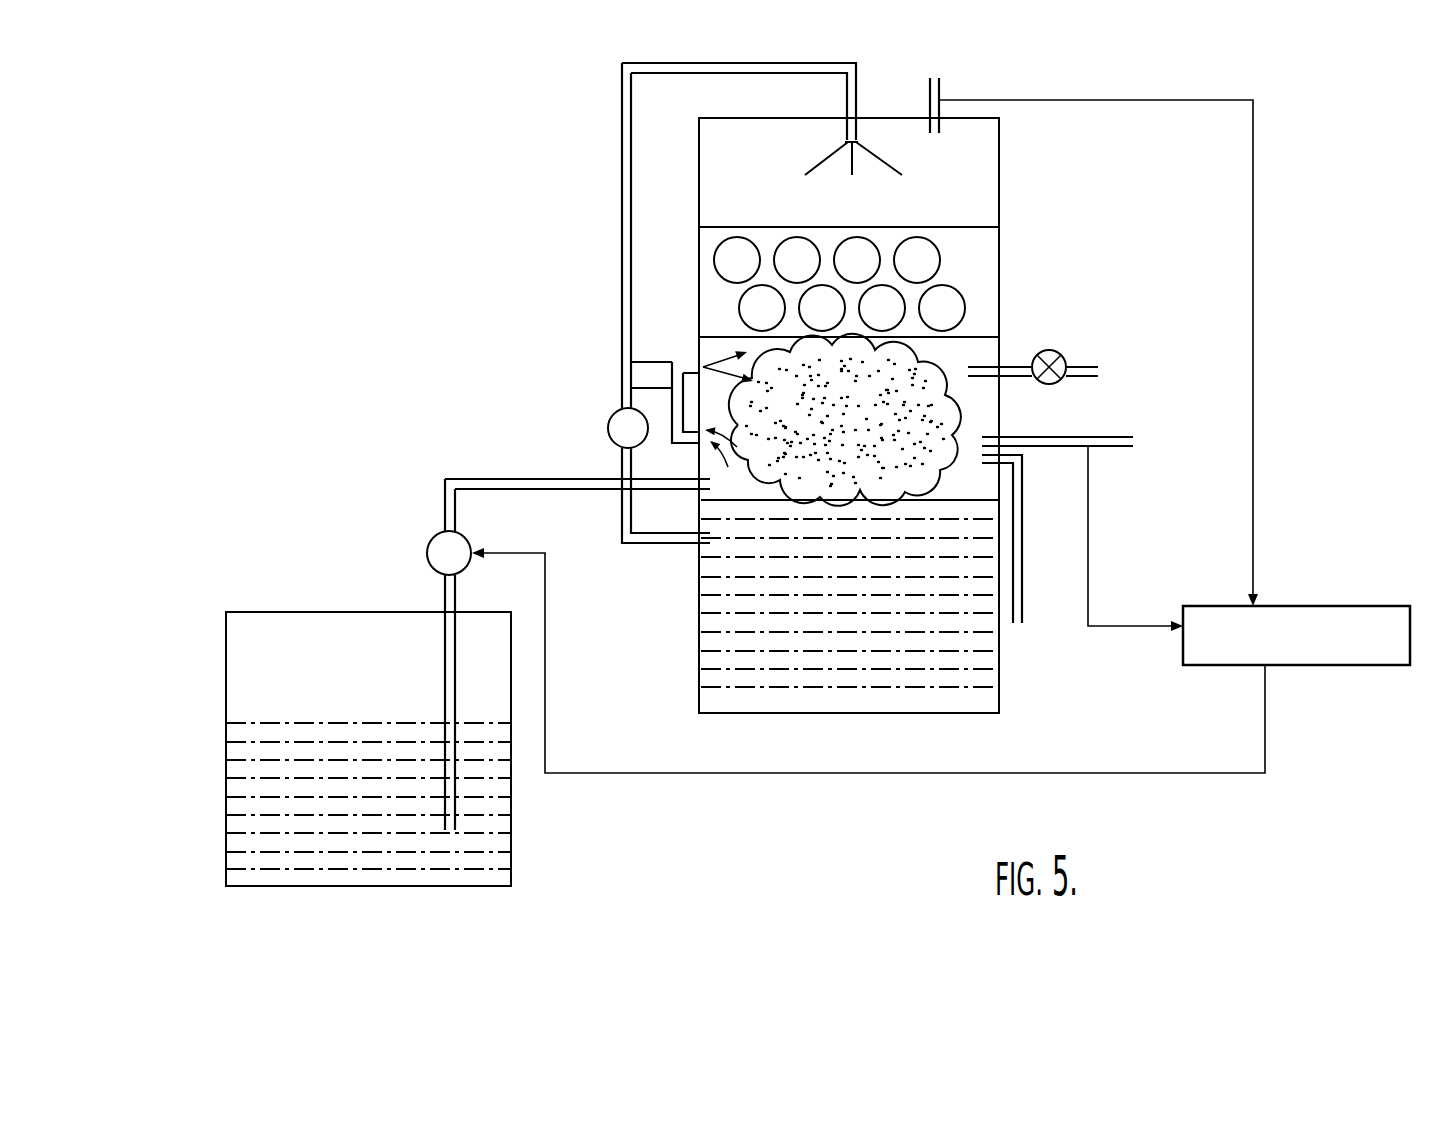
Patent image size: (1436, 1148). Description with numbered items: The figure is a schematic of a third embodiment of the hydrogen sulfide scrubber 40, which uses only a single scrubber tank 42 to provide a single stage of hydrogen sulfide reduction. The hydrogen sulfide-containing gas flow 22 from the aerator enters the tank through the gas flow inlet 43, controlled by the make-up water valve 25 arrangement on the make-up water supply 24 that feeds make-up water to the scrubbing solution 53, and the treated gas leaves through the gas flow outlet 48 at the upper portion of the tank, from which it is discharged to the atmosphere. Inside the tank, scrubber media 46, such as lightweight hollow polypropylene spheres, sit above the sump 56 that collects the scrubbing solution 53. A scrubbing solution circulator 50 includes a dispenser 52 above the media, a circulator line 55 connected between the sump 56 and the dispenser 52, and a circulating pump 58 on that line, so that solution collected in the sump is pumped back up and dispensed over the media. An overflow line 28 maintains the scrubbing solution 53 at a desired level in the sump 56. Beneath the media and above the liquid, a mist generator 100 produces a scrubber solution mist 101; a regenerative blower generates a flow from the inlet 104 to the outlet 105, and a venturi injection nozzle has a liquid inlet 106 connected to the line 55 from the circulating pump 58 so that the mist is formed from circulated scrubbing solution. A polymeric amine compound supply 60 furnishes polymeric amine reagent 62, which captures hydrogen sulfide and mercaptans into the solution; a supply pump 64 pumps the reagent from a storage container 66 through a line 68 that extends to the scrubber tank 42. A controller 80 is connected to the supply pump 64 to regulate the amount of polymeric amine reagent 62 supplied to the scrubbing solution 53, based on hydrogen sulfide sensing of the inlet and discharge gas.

The hydrogen sulfide scrubber 40 is at (660, 855).
The scrubber tank 42 is at (999, 195).
The scrubber media 46 is at (965, 300).
The dispenser 52 is at (857, 132).
The gas flow outlet 48 is at (940, 92).
The circulator line 55 is at (620, 193).
The circulating pump 58 is at (610, 422).
The mist generator 100 is at (669, 355).
The liquid inlet 106 is at (672, 373).
The outlet 105 is at (705, 362).
The inlet 104 is at (712, 470).
The scrubbing solution circulator 50 is at (615, 324).
The scrubber solution mist 101 is at (933, 362).
The scrubbing solution 53 is at (787, 687).
The sump 56 is at (948, 690).
The make-up water supply 24 is at (1090, 365).
The make-up water valve 25 is at (1052, 350).
The hydrogen sulfide-containing gas flow 22 is at (1088, 415).
The gas flow inlet 43 is at (1133, 437).
The overflow line 28 is at (1023, 543).
The controller 80 is at (941, 660).
The line 68 is at (458, 478).
The supply pump 64 is at (427, 551).
The polymeric amine compound supply 60 is at (328, 728).
The storage container 66 is at (226, 693).
The polymeric amine reagent 62 is at (427, 868).